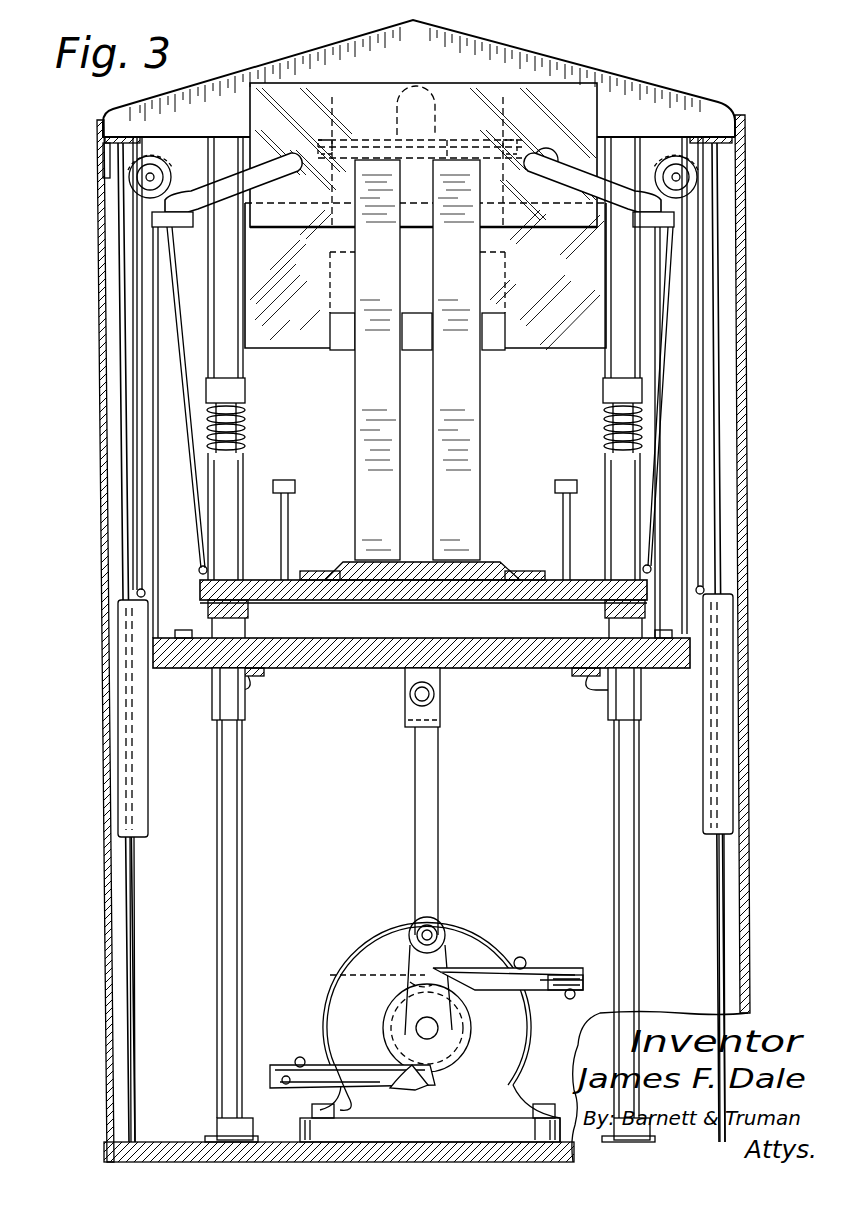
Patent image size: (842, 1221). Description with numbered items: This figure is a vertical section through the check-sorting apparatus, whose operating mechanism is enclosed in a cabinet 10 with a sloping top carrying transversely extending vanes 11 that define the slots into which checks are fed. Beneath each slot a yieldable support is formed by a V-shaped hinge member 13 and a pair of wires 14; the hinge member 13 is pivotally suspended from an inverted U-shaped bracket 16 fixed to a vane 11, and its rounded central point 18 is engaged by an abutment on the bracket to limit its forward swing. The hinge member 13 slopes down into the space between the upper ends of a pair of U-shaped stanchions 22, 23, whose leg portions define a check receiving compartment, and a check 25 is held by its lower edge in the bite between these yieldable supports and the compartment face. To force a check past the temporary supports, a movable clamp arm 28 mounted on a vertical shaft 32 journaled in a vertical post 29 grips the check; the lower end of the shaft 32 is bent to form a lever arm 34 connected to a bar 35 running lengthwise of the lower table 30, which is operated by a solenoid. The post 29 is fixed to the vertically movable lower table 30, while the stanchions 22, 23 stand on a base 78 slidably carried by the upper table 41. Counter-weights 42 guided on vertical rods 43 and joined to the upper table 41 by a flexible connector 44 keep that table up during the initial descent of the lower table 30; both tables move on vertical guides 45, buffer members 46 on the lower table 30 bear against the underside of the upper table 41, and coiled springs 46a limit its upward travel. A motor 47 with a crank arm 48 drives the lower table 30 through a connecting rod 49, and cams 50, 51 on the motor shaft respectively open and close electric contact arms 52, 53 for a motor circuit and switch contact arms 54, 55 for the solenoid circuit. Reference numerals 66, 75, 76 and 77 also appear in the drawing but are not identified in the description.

The cabinet 10 is at (100, 366).
The vane 11 is at (538, 60).
The hinge member 13 is at (470, 272).
The wires 14 is at (330, 108).
The bracket 16 is at (447, 215).
The central point of the hinge 18 is at (430, 212).
The stanchion 22 is at (357, 256).
The stanchion 23 is at (480, 275).
The check 25 is at (592, 86).
The clamp arm 28 is at (282, 163).
The vertical post 29 is at (160, 430).
The table 30 is at (385, 667).
The vertical shaft 32 is at (178, 480).
The lever arm 34 is at (218, 688).
The bar 35 is at (262, 680).
The upper table 41 is at (415, 598).
The counter-weight 42 is at (148, 748).
The rod 43 is at (135, 912).
The flexible connector 44 is at (135, 280).
The vertical guide 45 is at (243, 882).
The buffer member 46 is at (226, 600).
The coiled spring 46a is at (245, 432).
The motor 47 is at (378, 932).
The crank arm 48 is at (398, 955).
The connecting rod 49 is at (438, 775).
The cam 50 is at (330, 973).
The cam 51 is at (470, 1020).
The electric contact arm 52 is at (470, 968).
The electric contact arm 53 is at (515, 990).
The switch contact arm 54 is at (415, 1090).
The switch contact arm 55 is at (330, 1065).
The guide 66 is at (405, 100).
The stud 75 is at (290, 480).
The stud shank 76 is at (290, 522).
The block 77 is at (500, 350).
The base 78 is at (485, 568).